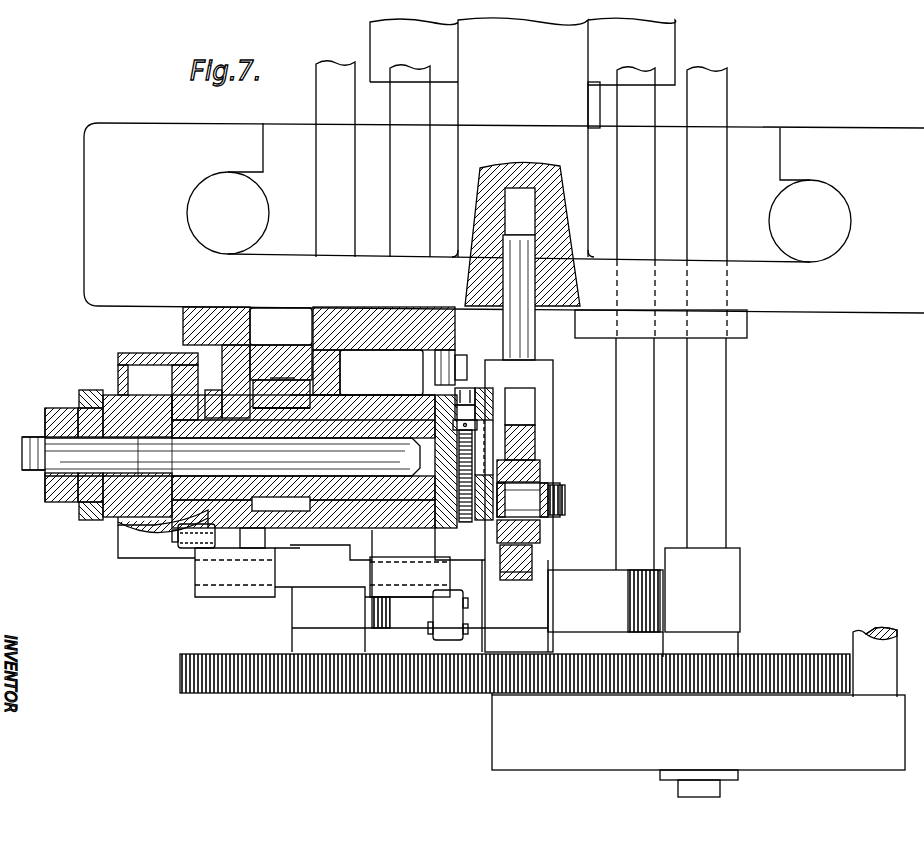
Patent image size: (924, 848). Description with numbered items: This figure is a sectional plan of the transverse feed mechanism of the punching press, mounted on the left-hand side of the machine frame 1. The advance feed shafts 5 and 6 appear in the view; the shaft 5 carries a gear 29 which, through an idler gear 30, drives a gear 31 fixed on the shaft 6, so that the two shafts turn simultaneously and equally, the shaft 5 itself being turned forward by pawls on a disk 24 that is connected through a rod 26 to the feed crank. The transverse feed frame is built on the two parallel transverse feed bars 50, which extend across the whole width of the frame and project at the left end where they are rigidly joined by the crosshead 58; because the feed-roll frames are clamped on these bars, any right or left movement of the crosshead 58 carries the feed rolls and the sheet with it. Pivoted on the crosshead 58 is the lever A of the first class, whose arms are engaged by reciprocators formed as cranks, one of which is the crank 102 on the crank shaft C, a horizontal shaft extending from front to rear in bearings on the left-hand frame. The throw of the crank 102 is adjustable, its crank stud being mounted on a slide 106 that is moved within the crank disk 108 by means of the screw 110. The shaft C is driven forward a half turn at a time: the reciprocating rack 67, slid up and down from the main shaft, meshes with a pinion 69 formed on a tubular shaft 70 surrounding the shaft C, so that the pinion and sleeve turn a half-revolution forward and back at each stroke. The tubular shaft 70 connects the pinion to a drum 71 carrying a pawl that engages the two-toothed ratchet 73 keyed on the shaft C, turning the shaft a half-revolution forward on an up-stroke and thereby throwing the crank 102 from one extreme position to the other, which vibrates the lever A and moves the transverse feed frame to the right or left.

The frame 1 is at (504, 218).
The feed shaft 5 is at (726, 428).
The feed shaft 6 is at (420, 356).
The disk 24 is at (698, 746).
The rod 26 is at (893, 684).
The gear 29 is at (80, 400).
The idler gear 30 is at (495, 690).
The gear 31 is at (256, 690).
The transverse feed bar 50 is at (616, 440).
The crosshead 58 is at (643, 613).
The reciprocating rack 67 is at (284, 376).
The pinion 69 is at (278, 528).
The tubular shaft 70 is at (366, 420).
The drum 71 is at (153, 353).
The two-toothed ratchet 73 is at (156, 400).
The crank 102 is at (552, 500).
The slide 106 is at (473, 525).
The crank disk 108 is at (484, 385).
The screw 110 is at (505, 440).
The lever A is at (518, 440).
The crank shaft C is at (221, 455).